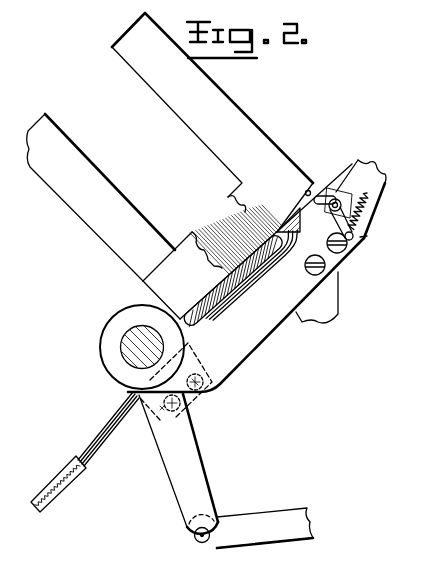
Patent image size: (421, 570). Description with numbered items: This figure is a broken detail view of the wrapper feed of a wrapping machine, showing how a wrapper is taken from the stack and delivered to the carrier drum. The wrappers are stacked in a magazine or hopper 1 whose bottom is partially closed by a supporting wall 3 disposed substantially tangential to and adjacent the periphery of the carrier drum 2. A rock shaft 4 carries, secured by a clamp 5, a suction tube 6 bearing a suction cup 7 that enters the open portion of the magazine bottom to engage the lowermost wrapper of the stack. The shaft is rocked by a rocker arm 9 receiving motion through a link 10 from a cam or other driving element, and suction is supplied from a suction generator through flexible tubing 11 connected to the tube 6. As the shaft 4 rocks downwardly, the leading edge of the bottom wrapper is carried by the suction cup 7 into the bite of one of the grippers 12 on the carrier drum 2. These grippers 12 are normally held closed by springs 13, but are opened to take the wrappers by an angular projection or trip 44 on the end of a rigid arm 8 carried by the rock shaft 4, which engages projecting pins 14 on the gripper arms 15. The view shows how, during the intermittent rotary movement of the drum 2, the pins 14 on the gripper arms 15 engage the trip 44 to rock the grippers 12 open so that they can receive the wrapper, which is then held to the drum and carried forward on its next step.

The magazine or hopper 1 is at (279, 176).
The carrier drum 2 is at (338, 300).
The supporting wall 3 is at (213, 275).
The rock shaft 4 is at (113, 355).
The clamp 5 is at (171, 412).
The suction tube 6 is at (115, 436).
The suction cup 7 is at (292, 222).
The rigid arm 8 is at (278, 333).
The rocker arm 9 is at (189, 440).
The link 10 is at (253, 520).
The flexible tubing 11 is at (62, 487).
The gripper 12 is at (323, 200).
The spring 13 is at (376, 206).
The projecting pin 14 is at (355, 250).
The gripper arm 15 is at (350, 178).
The angular projection or trip 44 is at (367, 236).